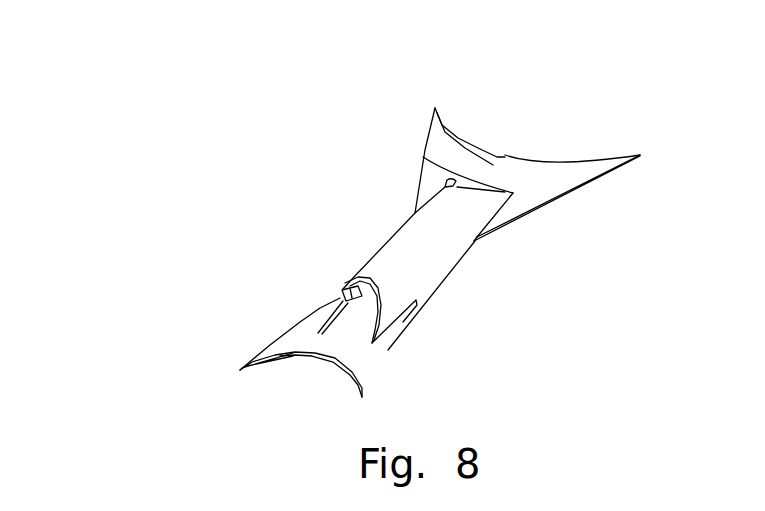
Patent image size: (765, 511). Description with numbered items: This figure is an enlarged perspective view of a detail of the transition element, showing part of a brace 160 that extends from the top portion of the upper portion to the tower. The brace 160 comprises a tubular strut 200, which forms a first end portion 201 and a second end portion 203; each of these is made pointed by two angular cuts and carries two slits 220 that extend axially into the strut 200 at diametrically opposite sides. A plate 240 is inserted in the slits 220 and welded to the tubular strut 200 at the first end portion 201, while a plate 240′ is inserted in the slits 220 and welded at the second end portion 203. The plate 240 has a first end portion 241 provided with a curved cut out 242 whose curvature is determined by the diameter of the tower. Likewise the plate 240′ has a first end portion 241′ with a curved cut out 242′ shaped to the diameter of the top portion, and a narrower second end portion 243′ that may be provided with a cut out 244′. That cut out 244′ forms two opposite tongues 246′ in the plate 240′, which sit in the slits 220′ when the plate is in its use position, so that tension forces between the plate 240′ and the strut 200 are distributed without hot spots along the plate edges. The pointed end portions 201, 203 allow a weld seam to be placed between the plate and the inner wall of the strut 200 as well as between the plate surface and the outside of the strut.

The brace 160 is at (295, 163).
The curved cut out 242 is at (505, 155).
The first end portion 241 is at (435, 108).
The plate 240 is at (423, 157).
The first end portion 201 is at (450, 202).
The slits 220 is at (488, 218).
The tubular strut 200 is at (413, 250).
The second end portion 203 is at (377, 273).
The tongues 246′ is at (342, 290).
The slot of second leg 220′ is at (345, 293).
The cut out 244′ is at (375, 305).
The second end portion 243′ is at (337, 340).
The plate 240′ is at (365, 308).
The first end portion 241′ is at (337, 340).
The curved cut out 242′ is at (343, 363).